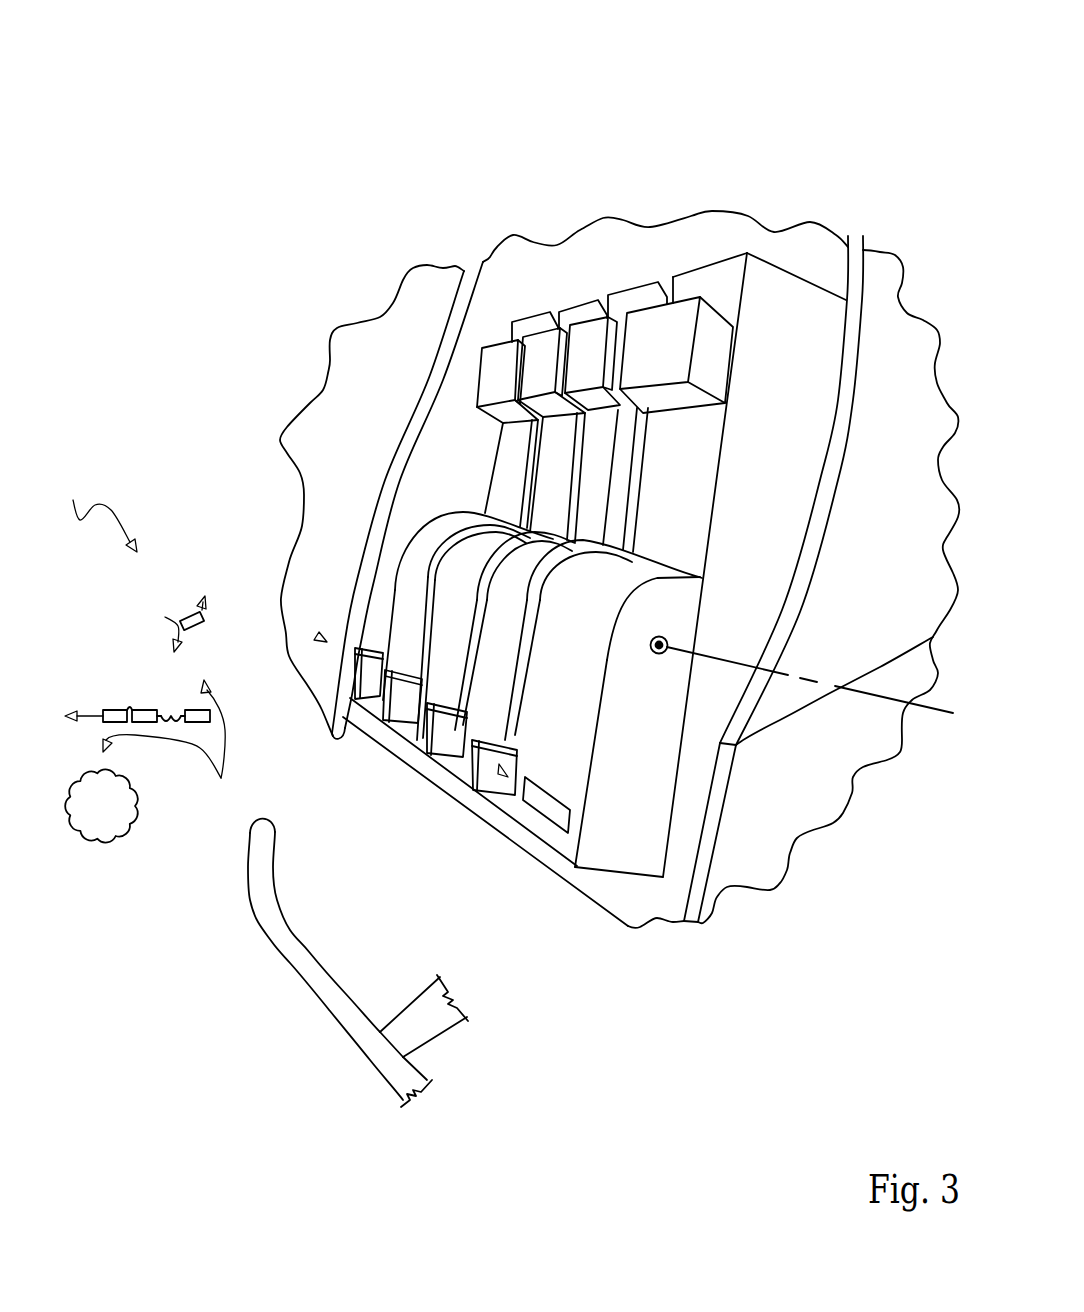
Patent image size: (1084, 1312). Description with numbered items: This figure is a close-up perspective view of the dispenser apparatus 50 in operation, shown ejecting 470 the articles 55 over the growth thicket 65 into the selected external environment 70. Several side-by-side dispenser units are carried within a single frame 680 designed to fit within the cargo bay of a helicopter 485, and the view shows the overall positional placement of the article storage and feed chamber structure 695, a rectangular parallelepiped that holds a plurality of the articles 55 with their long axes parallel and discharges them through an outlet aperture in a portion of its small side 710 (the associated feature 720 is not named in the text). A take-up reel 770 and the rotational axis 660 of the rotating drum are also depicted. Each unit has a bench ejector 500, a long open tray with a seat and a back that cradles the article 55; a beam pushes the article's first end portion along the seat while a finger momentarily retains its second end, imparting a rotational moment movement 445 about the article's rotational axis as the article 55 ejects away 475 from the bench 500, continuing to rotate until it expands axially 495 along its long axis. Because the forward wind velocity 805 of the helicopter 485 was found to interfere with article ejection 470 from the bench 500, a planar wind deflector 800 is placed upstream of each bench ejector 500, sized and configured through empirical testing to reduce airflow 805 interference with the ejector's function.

The dispenser apparatus 50 is at (862, 64).
The external environment 70 is at (196, 296).
The helicopter 485 is at (920, 494).
The article storage and feed chamber structure 695 is at (895, 345).
The take-up reel 770 is at (503, 378).
The small side 710 is at (455, 403).
The fluid conduit 720 is at (510, 478).
The bench ejector 500 is at (553, 810).
The rotational axis 660 is at (932, 713).
The frame 680 is at (610, 890).
The planar wind deflector 800 is at (438, 747).
The forward wind velocity 805 is at (322, 640).
The ejecting 470 is at (102, 510).
The ejects away 475 is at (102, 510).
The rotational moment movement 445 is at (183, 619).
The article 55 is at (193, 708).
The expands axially 495 is at (90, 716).
The growth thicket 65 is at (121, 819).